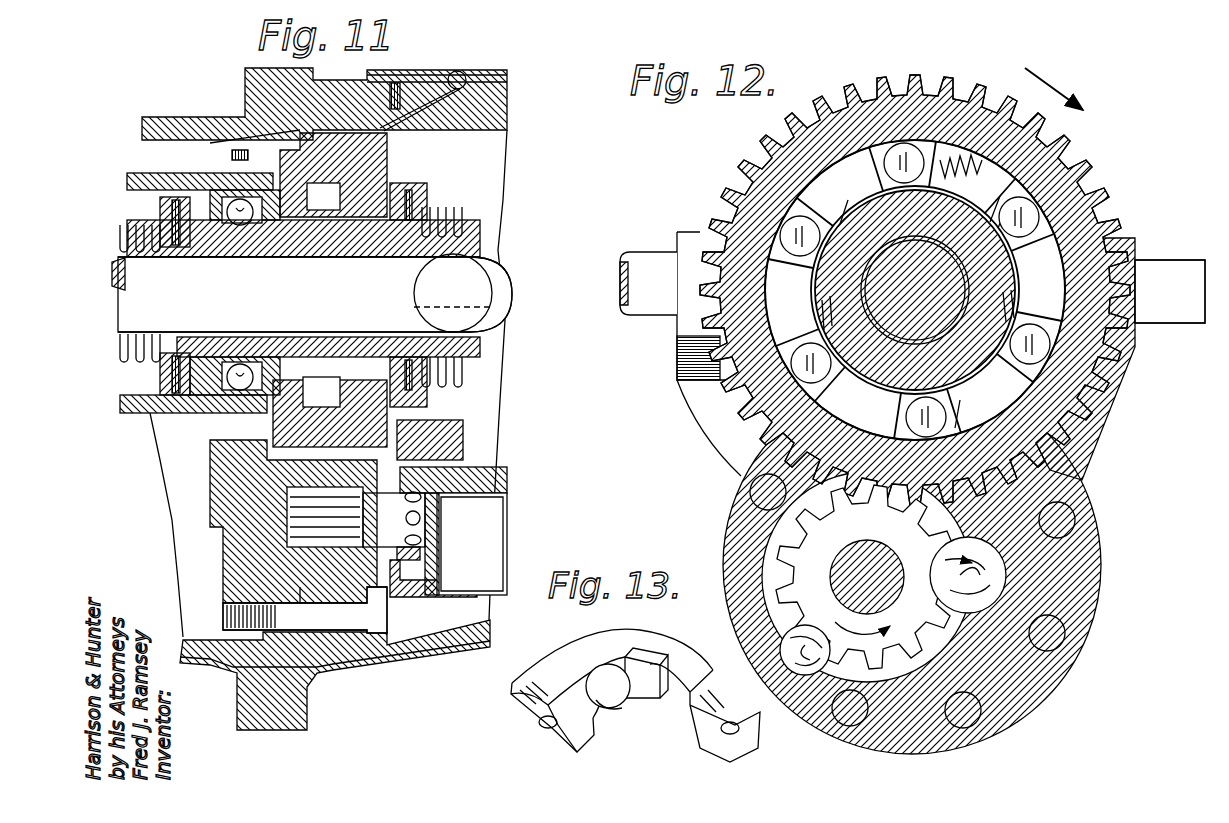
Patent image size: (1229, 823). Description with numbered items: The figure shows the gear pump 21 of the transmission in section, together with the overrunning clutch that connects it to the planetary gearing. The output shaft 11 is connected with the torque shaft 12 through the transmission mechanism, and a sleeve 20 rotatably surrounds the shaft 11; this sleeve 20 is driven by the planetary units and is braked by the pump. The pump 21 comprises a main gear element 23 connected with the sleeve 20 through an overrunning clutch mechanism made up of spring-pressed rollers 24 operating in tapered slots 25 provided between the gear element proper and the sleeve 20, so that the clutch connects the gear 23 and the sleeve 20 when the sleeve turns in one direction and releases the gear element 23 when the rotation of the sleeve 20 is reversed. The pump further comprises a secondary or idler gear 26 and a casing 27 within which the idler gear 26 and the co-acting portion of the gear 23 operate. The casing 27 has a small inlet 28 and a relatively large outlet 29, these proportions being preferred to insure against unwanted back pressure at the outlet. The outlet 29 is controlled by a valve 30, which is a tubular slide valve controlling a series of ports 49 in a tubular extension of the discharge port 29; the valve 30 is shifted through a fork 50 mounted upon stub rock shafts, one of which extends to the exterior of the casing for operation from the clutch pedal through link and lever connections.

In FIG. 11, the output shaft 11 is at (312, 293).
In FIG. 12, the output shaft 11 is at (915, 290).
In FIG. 11, the torque shaft 12 is at (313, 100).
In FIG. 11, the sleeve 20 is at (480, 245).
In FIG. 12, the sleeve 20 is at (980, 247).
In FIG. 12, the gear pump 21 is at (1020, 405).
In FIG. 11, the main gear element 23 is at (363, 160).
In FIG. 12, the main gear element 23 is at (917, 95).
In FIG. 11, the spring-pressed rollers 24 is at (283, 295).
In FIG. 12, the spring-pressed rollers 24 is at (1020, 205).
In FIG. 13, the spring-pressed rollers 24 is at (612, 706).
In FIG. 12, the tapered slots 25 is at (768, 208).
In FIG. 13, the tapered slots 25 is at (590, 670).
In FIG. 11, the idler gear 26 is at (300, 505).
In FIG. 12, the idler gear 26 is at (867, 577).
In FIG. 11, the casing 27 is at (352, 582).
In FIG. 12, the casing 27 is at (1040, 690).
In FIG. 12, the inlet 28 is at (810, 668).
In FIG. 11, the outlet 29 is at (405, 497).
In FIG. 12, the outlet 29 is at (968, 575).
In FIG. 11, the valve 30 is at (400, 460).
In FIG. 11, the ports 49 is at (420, 540).
In FIG. 11, the fork 50 is at (462, 381).